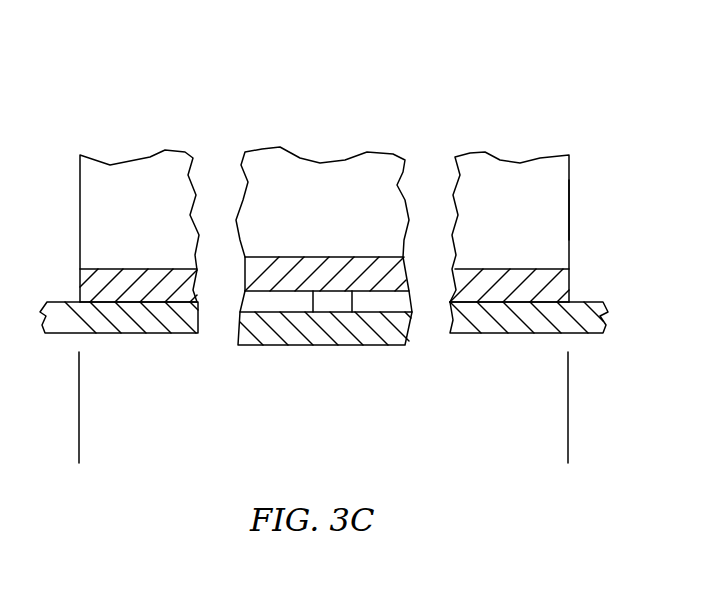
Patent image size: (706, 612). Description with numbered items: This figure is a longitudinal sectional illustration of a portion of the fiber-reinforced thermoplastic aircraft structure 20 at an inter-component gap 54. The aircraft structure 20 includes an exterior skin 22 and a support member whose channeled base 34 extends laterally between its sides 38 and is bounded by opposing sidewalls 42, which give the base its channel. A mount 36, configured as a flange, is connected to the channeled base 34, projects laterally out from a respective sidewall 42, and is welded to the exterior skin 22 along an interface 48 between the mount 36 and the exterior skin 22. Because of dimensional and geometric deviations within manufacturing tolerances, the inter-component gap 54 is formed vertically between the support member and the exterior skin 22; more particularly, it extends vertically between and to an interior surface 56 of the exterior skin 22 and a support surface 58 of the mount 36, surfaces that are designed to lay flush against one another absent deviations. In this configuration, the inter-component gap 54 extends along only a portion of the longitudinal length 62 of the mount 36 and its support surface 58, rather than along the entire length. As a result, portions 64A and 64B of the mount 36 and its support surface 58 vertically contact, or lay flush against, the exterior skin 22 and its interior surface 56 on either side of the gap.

The aircraft structure 20 is at (355, 240).
The exterior skin 22 is at (137, 352).
The channeled base 34 is at (284, 146).
The mount 36 is at (108, 260).
The side of the channeled base 38 is at (626, 210).
The sidewall 42 is at (555, 194).
The interface 48 is at (588, 302).
The inter-component gap 54 is at (259, 313).
The interior surface 56 is at (316, 292).
The support surface 58 is at (352, 298).
The longitudinal length 62 is at (568, 453).
The portion of the mount 64A is at (143, 266).
The portion of the mount 64B is at (497, 266).